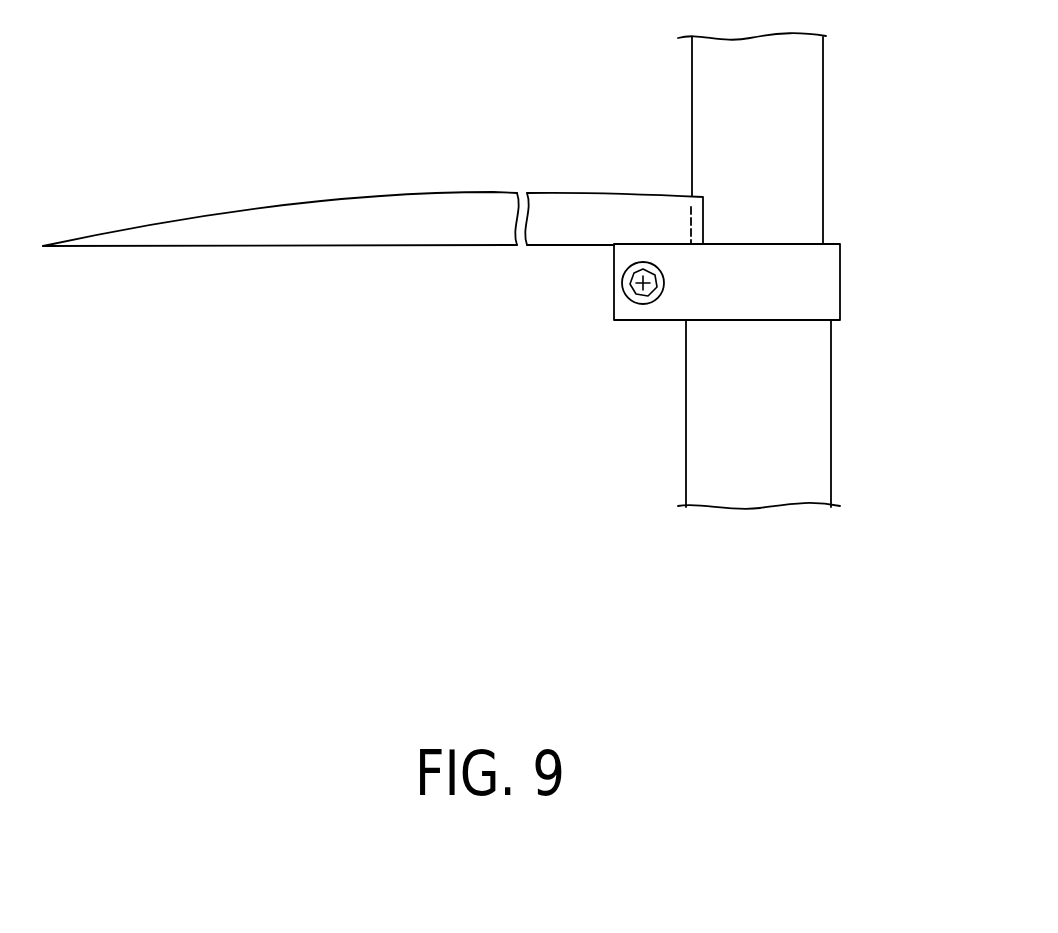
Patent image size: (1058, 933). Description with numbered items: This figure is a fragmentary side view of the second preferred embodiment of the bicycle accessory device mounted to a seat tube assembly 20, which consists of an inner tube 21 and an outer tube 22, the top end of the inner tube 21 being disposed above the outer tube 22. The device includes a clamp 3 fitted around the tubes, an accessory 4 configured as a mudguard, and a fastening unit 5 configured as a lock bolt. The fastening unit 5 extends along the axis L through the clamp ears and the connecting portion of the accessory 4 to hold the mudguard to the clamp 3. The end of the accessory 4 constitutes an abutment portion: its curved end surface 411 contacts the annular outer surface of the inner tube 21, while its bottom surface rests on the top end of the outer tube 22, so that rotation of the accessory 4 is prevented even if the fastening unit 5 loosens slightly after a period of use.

The seat tube assembly 20 is at (804, 271).
The inner tube 21 is at (797, 120).
The outer tube 22 is at (813, 437).
The clamp 3 is at (862, 272).
The accessory 4 is at (583, 166).
The curved end surface 411 is at (690, 220).
The fastening unit 5 is at (639, 328).
The axis L is at (637, 285).